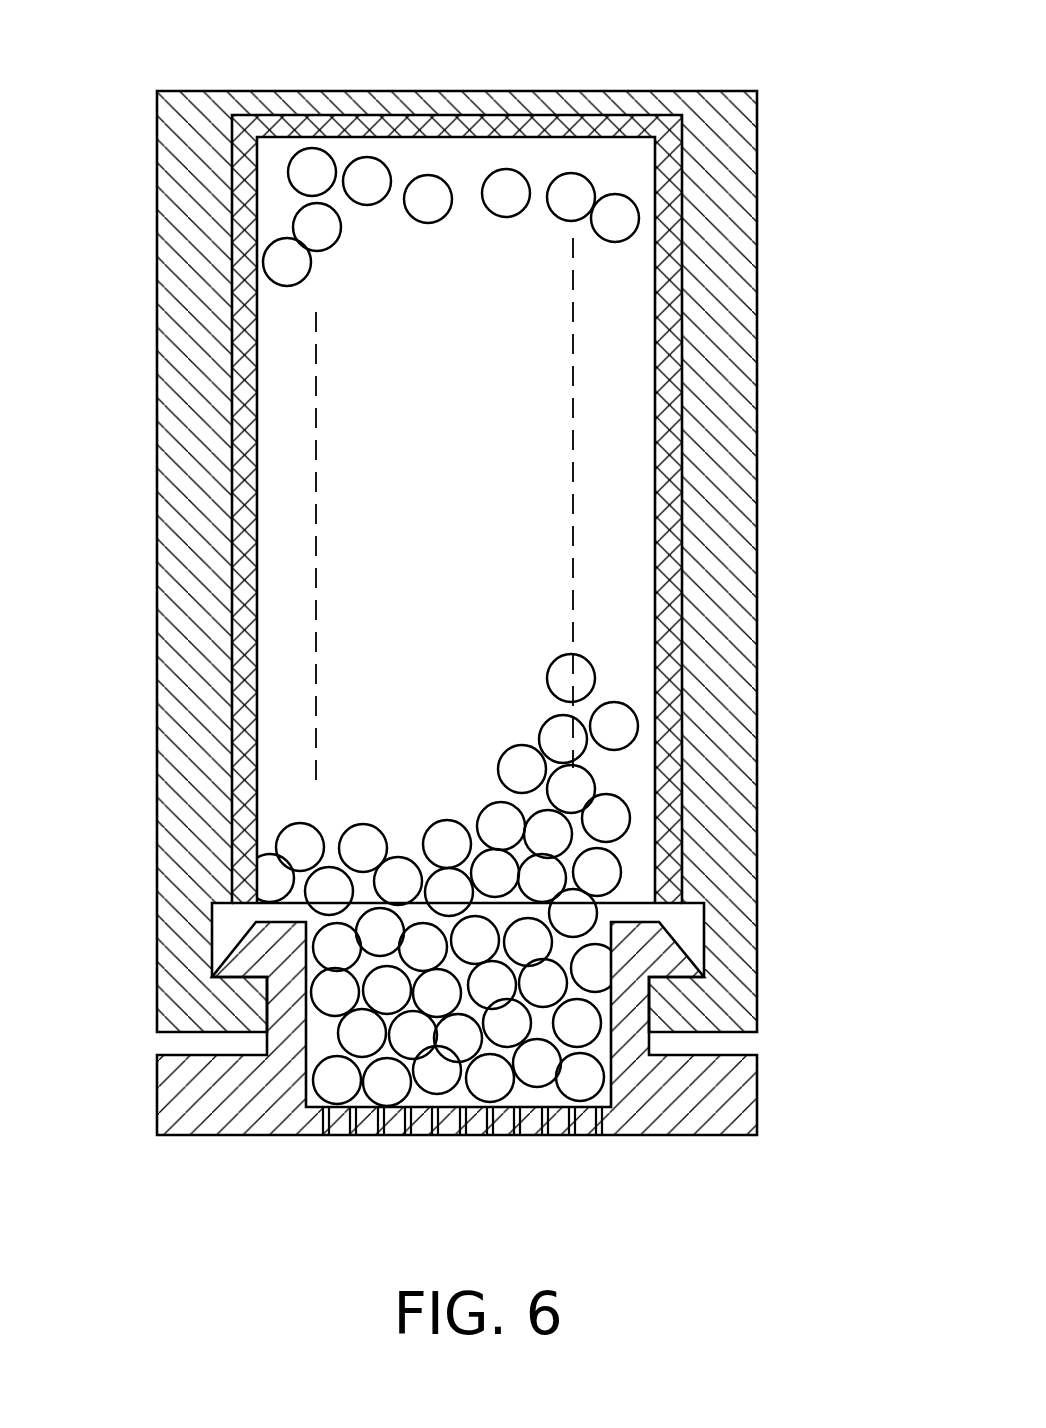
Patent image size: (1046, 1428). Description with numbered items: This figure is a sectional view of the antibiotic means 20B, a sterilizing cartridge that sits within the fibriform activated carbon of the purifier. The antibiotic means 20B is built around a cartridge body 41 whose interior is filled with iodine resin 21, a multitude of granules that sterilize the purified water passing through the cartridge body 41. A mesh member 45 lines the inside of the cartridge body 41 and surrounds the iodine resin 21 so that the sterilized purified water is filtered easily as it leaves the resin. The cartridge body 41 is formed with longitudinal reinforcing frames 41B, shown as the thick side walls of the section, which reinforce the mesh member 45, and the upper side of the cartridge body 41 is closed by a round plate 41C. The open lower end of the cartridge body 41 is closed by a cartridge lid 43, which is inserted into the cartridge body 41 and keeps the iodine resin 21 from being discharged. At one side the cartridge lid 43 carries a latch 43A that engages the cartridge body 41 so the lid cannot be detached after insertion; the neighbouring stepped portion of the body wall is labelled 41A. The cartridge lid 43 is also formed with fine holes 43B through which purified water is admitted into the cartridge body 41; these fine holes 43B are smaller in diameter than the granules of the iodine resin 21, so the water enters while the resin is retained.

The antibiotic means 20B is at (782, 112).
The cartridge body 41 is at (774, 732).
The housing flange portion 41A is at (213, 980).
The longitudinal reinforcing frames 41B is at (742, 500).
The round plate 41C is at (458, 103).
The mesh member 45 is at (660, 334).
The iodine resin 21 is at (357, 848).
The cartridge lid 43 is at (723, 1097).
The latch 43A is at (688, 994).
The fine holes 43B is at (577, 1136).